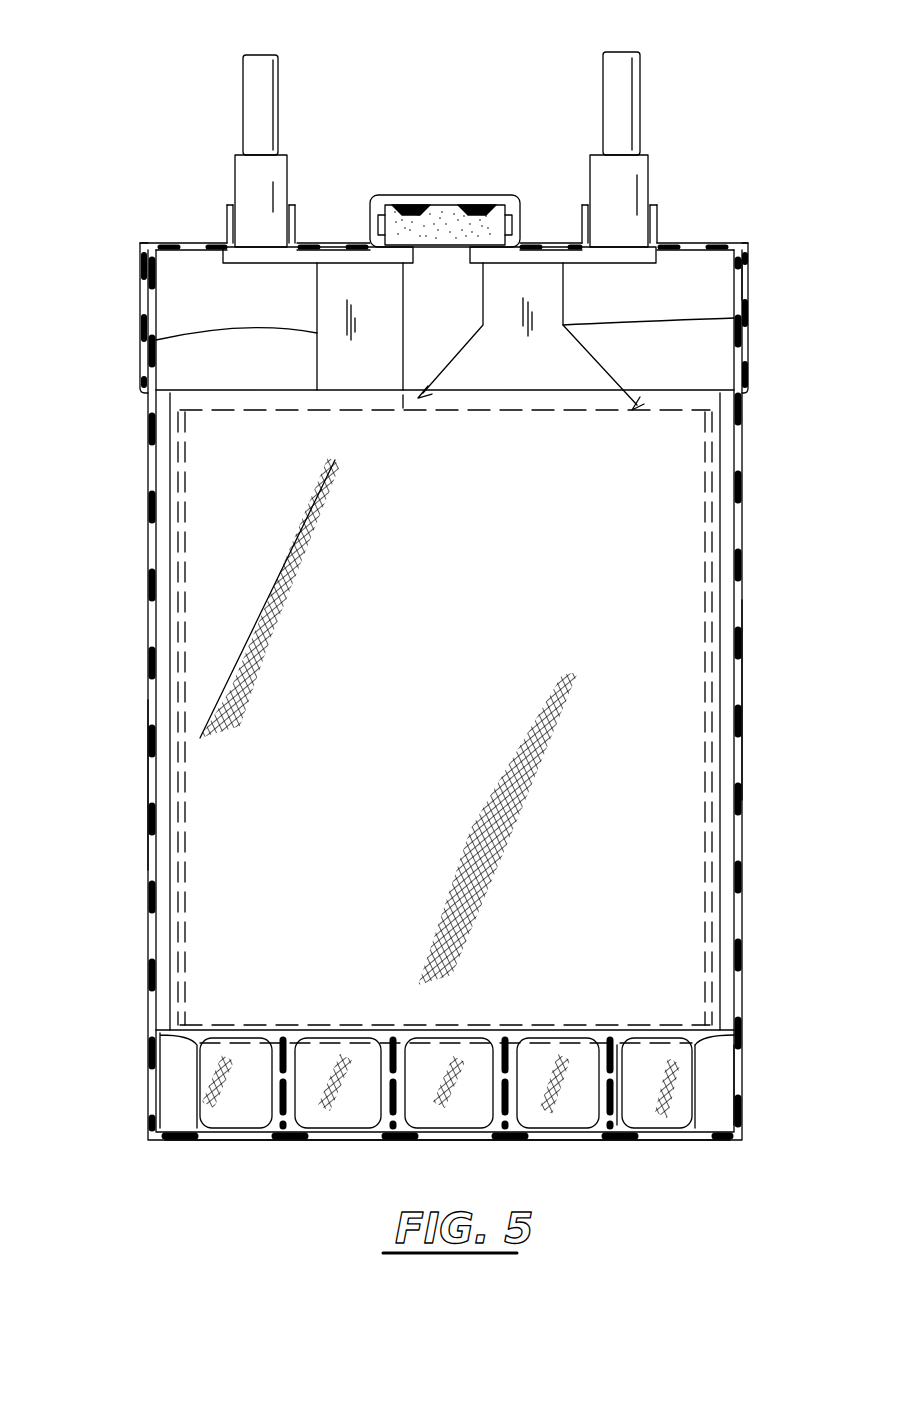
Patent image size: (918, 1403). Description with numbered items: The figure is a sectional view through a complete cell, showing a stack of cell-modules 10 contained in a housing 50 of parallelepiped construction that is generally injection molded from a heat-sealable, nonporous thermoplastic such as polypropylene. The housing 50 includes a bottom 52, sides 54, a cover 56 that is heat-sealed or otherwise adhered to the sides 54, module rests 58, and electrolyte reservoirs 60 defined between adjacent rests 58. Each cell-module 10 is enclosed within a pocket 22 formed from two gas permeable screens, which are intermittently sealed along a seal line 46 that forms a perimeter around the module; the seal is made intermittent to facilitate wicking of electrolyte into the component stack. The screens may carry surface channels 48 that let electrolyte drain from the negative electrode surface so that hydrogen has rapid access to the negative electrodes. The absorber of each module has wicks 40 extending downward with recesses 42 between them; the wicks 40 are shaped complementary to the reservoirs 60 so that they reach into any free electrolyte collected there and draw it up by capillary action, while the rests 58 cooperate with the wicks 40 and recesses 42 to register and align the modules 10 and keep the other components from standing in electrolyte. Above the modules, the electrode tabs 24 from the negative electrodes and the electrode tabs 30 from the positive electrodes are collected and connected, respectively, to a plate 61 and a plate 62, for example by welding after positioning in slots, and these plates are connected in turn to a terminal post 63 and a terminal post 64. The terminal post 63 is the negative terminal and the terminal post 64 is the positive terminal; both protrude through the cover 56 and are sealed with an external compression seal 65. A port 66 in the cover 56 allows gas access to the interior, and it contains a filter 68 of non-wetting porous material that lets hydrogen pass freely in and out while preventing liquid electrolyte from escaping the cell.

The cell-module 10 is at (446, 606).
The pocket 22 is at (712, 900).
The electrode tab 24 is at (744, 322).
The electrode tab 30 is at (152, 338).
The wicks 40 is at (696, 1085).
The recesses 42 is at (632, 1098).
The seal line 46 is at (722, 838).
The surface channels 48 is at (218, 684).
The housing 50 is at (744, 745).
The bottom 52 is at (345, 1140).
The sides 54 is at (150, 780).
The cover 56 is at (748, 290).
The module rests 58 is at (598, 1110).
The electrolyte reservoirs 60 is at (712, 1128).
The plate 61 is at (660, 258).
The plate 62 is at (233, 253).
The terminal post 63 is at (642, 72).
The terminal post 64 is at (280, 75).
The external compression seal 65 is at (652, 192).
The port 66 is at (478, 212).
The filter 68 is at (435, 182).